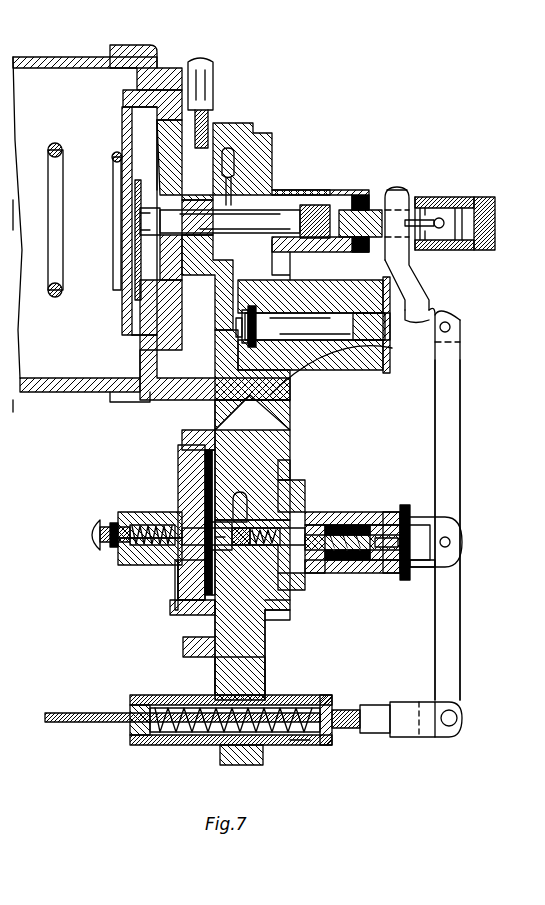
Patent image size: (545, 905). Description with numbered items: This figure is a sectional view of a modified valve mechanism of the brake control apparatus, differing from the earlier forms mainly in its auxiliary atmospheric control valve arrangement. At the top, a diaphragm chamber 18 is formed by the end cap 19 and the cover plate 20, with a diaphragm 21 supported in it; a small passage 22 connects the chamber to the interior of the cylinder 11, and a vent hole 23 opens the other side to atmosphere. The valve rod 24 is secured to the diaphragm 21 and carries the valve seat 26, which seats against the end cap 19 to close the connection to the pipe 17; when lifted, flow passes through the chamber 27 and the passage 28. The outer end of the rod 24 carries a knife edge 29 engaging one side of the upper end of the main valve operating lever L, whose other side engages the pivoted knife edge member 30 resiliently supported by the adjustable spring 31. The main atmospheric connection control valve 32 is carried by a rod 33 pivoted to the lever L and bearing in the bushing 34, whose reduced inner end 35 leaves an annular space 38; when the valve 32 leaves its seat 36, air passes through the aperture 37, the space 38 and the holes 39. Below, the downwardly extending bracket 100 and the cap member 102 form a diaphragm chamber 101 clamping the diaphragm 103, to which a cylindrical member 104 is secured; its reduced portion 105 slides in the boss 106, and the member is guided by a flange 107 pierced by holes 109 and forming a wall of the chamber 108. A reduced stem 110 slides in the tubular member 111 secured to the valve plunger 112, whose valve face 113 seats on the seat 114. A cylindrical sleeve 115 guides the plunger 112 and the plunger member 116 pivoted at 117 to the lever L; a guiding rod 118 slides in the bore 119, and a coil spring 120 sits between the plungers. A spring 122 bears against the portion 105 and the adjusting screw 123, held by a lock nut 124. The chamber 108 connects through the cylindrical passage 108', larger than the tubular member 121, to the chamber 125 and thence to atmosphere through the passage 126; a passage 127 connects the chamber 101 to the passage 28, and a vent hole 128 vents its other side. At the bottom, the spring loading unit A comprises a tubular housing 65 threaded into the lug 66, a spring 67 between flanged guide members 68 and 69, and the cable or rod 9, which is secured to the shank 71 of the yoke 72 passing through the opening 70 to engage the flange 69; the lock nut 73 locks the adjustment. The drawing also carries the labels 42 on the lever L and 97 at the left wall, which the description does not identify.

The operating cable or rod 9 is at (100, 722).
The cylinder 11 is at (58, 385).
The pipe 17 is at (213, 68).
The diaphragm chamber 18 is at (132, 305).
The end cap 19 is at (155, 50).
The cover plate 20 is at (122, 205).
The diaphragm 21 is at (130, 128).
The passage 22 is at (125, 258).
The vent hole 23 is at (140, 95).
The valve rod 24 is at (302, 205).
The valve seat 26 is at (228, 212).
The chamber 27 is at (235, 150).
The passage 28 is at (235, 365).
The knife edge 29 is at (380, 210).
The pivoted knife edge member 30 is at (425, 250).
The adjustable spring 31 is at (482, 197).
The main atmospheric connection control valve 32 is at (245, 310).
The rod 33 is at (383, 365).
The bushing 34 is at (440, 285).
The reduced diameter inner end 35 is at (300, 368).
The seat 36 is at (250, 355).
The aperture 37 is at (236, 318).
The annular space 38 is at (315, 392).
The holes 39 is at (280, 285).
The pivot pin 42 is at (452, 325).
The tubular housing 65 is at (165, 695).
The extending lug 66 is at (232, 668).
The spring 67 is at (176, 745).
The flanged guide member 68 is at (136, 745).
The flanged guide member 69 is at (330, 745).
The opening 70 is at (340, 710).
The shank 71 is at (380, 705).
The yoke 72 is at (458, 718).
The lock nut 73 is at (222, 755).
The wall 97 is at (12, 408).
The downwardly extending bracket 100 is at (270, 418).
The diaphragm chamber 101 is at (178, 458).
The cap member 102 is at (178, 580).
The diaphragm 103 is at (190, 637).
The cylindrical member 104 is at (272, 640).
The reduced portion 105 is at (175, 512).
The outwardly projecting boss 106 is at (135, 565).
The flange 107 is at (265, 660).
The chamber 108 is at (268, 564).
The cylindrical passage 108' is at (318, 630).
The holes 109 is at (205, 490).
The reduced stem 110 is at (255, 470).
The tubular member 111 is at (270, 560).
The valve plunger 112 is at (305, 517).
The valve face 113 is at (312, 580).
The seat 114 is at (295, 500).
The cylindrical sleeve 115 is at (385, 573).
The plunger member 116 is at (440, 517).
The pivot 117 is at (450, 540).
The guiding rod 118 is at (378, 512).
The bore 119 is at (435, 562).
The coil spring 120 is at (355, 525).
The tubular member 121 is at (265, 570).
The spring 122 is at (150, 520).
The adjusting screw 123 is at (92, 528).
The lock nut 124 is at (112, 548).
The chamber 125 is at (318, 585).
The passage 126 is at (285, 480).
The passage 127 is at (192, 432).
The vent hole 128 is at (180, 598).
The main valve operating lever L is at (472, 530).
The spring loading unit A is at (300, 745).